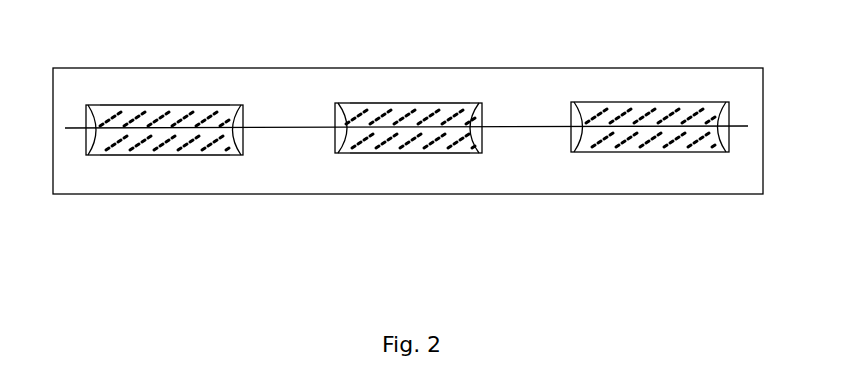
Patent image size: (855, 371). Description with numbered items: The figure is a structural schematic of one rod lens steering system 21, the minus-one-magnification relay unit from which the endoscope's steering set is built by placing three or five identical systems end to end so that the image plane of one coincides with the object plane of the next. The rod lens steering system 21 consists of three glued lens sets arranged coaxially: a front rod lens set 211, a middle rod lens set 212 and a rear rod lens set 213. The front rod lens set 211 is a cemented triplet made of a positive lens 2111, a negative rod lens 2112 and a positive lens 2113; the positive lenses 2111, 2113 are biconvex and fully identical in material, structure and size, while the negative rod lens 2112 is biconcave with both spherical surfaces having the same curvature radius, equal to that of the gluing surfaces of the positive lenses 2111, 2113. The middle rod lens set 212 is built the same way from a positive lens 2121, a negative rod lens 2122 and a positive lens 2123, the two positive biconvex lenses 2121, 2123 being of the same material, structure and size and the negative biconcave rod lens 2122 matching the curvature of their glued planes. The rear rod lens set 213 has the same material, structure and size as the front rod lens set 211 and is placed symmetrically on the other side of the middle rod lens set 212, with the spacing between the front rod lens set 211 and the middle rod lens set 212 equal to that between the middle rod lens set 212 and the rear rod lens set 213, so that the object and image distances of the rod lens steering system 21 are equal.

The rod lens steering system 21 is at (383, 57).
The front rod lens set 211 is at (145, 131).
The positive lens 2111 is at (93, 143).
The negative rod lens 2112 is at (158, 140).
The positive lens 2113 is at (235, 150).
The middle rod lens set 212 is at (407, 180).
The positive lens 2121 is at (340, 148).
The negative rod lens 2122 is at (388, 145).
The positive lens 2123 is at (480, 150).
The rear rod lens set 213 is at (662, 160).